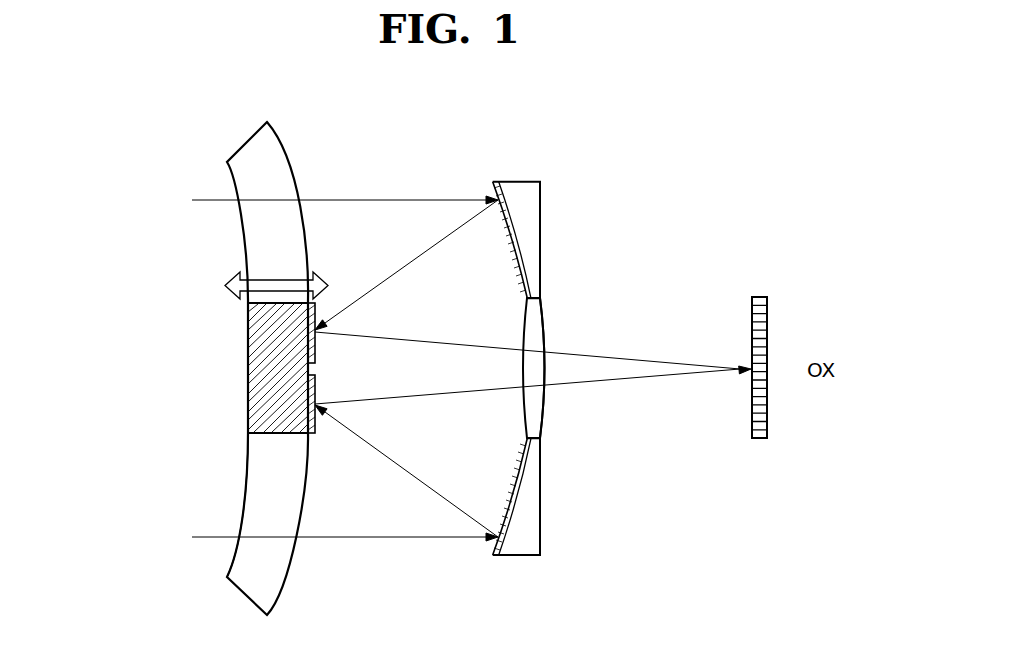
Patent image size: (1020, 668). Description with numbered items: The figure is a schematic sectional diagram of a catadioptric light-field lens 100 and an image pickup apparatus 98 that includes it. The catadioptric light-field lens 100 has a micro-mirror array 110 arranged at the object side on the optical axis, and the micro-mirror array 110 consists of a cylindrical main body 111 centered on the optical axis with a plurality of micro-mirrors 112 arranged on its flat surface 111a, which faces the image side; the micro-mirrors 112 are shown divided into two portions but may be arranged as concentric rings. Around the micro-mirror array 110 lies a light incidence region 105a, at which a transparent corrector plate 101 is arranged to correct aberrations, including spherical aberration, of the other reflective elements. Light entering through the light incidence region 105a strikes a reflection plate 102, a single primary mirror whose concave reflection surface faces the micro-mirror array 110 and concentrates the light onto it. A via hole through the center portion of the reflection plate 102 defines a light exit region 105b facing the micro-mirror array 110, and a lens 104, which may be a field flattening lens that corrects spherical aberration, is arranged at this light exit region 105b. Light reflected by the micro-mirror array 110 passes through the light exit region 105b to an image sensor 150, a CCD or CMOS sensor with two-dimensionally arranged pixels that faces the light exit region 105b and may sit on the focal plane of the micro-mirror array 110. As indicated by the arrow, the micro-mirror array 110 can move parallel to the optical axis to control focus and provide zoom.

The catadioptric light-field lens 100 is at (107, 150).
The transparent corrector plate 101 is at (248, 142).
The image pickup apparatus 98 is at (693, 168).
The reflection plate 102 is at (518, 247).
The lens 104 is at (537, 415).
The light incidence region 105a is at (240, 497).
The light exit region 105b is at (552, 410).
The micro-mirror array 110 is at (245, 405).
The main body 111 is at (258, 330).
The flat surface 111a is at (313, 367).
The micro-mirrors 112 is at (318, 303).
The image sensor 150 is at (760, 438).